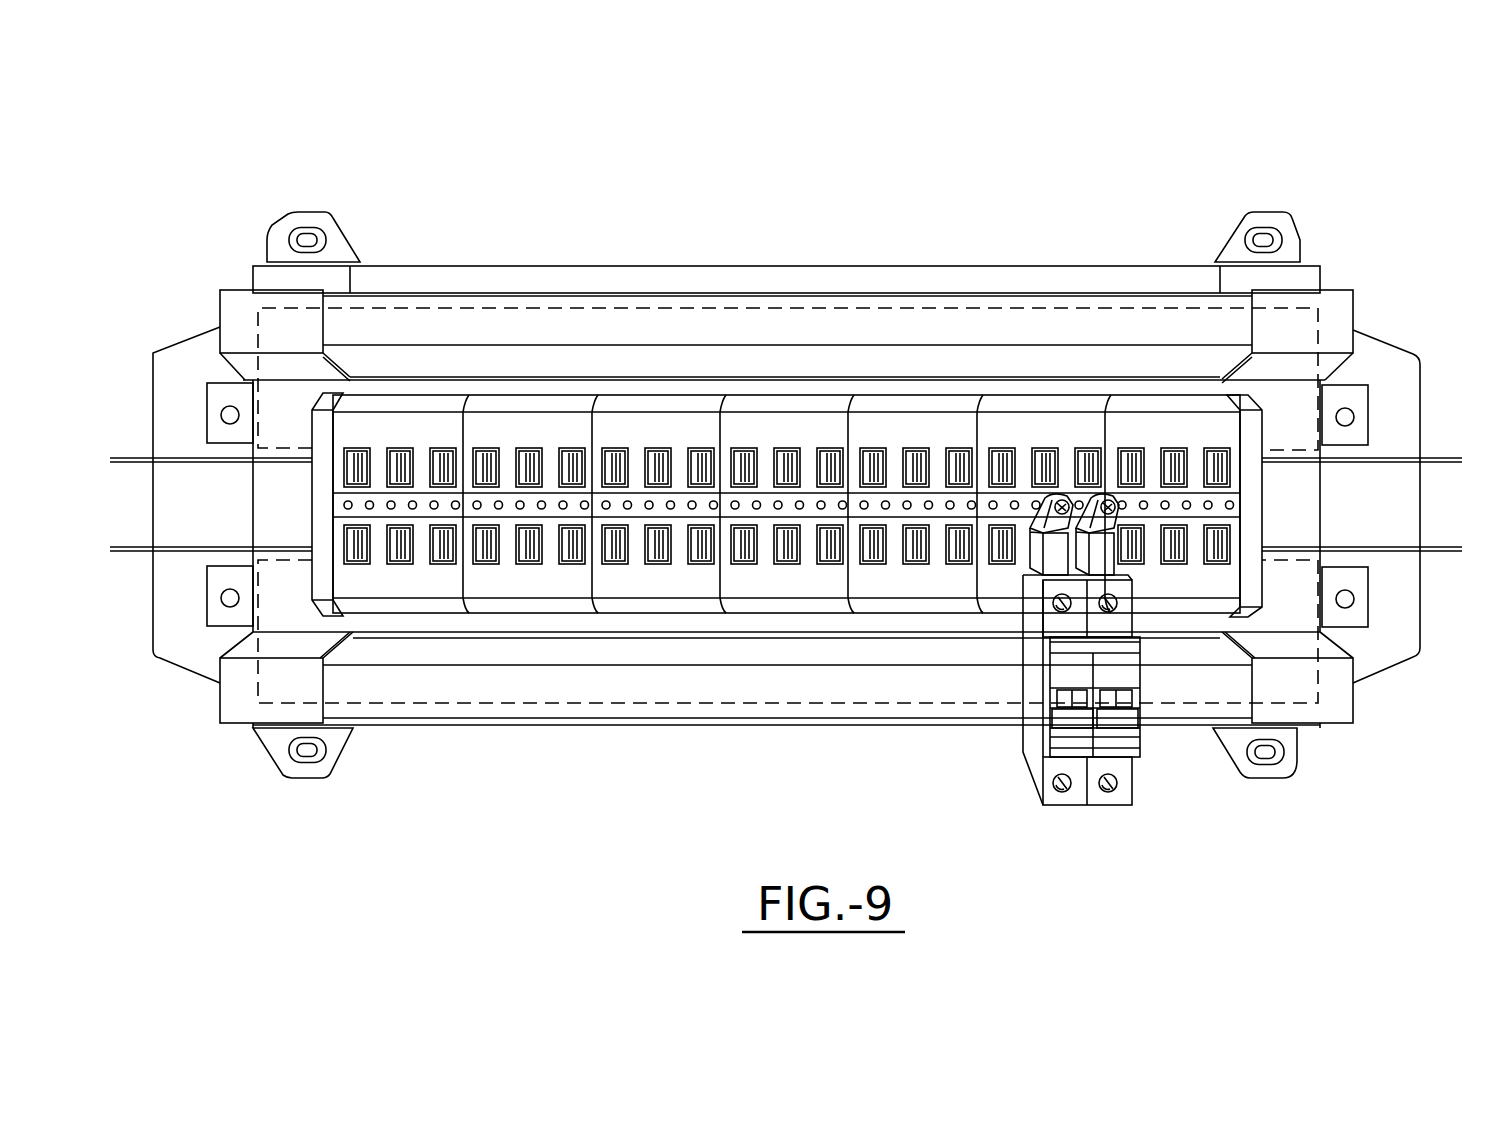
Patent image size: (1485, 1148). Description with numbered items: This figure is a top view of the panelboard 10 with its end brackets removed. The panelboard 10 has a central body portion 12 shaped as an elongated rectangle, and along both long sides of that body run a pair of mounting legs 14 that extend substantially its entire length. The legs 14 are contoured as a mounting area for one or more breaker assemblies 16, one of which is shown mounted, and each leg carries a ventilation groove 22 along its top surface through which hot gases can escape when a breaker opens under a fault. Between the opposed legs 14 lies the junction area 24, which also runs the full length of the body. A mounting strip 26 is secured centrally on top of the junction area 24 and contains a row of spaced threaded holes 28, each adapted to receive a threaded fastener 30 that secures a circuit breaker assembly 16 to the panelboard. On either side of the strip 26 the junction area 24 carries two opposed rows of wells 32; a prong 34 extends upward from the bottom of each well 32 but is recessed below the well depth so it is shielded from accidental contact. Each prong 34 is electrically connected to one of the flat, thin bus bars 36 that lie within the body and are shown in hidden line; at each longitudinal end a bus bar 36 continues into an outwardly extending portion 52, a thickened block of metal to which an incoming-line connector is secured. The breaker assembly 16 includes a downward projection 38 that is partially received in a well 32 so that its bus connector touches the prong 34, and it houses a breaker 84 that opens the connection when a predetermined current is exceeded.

The panelboard 10 is at (1087, 172).
The central body portion 12 is at (736, 265).
The mounting legs 14 is at (968, 330).
The breaker assembly 16 is at (1036, 772).
The ventilation groove 22 is at (513, 387).
The junction area 24 is at (787, 588).
The mounting strip 26 is at (423, 500).
The threaded holes 28 is at (477, 500).
The threaded fastener 30 is at (1048, 500).
The wells 32 is at (518, 447).
The prong 34 is at (905, 465).
The bus bars 36 is at (823, 306).
The projection 38 is at (1033, 548).
The outwardly extending portion 52 is at (215, 400).
The breaker 84 is at (1037, 682).